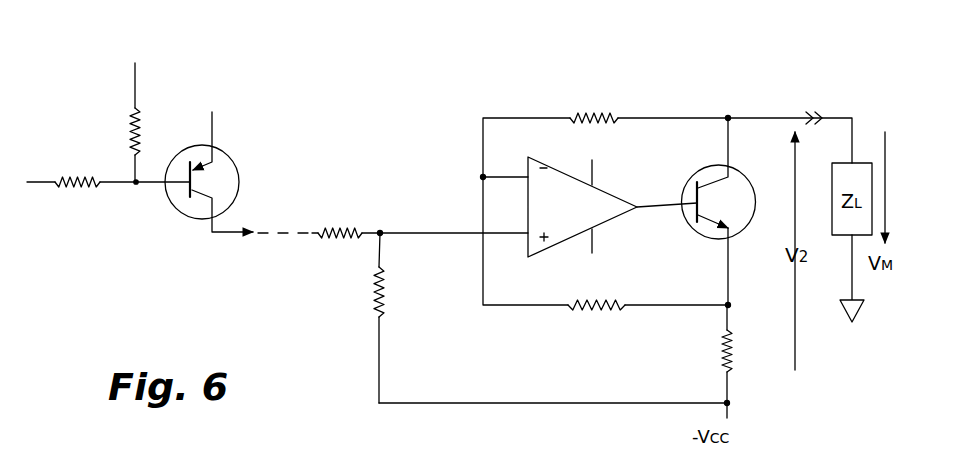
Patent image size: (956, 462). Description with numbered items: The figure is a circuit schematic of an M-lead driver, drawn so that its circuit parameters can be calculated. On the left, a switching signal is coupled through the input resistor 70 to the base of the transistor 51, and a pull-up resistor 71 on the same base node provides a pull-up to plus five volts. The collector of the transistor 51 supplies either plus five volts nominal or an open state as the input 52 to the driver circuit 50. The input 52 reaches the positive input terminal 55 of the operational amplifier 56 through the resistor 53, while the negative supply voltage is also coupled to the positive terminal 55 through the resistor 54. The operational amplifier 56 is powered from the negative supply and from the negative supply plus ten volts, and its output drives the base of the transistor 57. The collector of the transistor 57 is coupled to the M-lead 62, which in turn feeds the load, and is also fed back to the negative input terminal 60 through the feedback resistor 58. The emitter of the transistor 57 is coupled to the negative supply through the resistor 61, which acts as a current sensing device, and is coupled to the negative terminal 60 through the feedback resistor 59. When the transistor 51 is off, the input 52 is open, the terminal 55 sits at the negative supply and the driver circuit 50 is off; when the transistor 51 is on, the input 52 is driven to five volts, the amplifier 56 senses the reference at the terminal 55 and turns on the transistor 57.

The input resistor 70 is at (72, 190).
The pull-up resistor 71 is at (135, 133).
The transistor 51 is at (237, 162).
The input 52 is at (300, 233).
The resistor 53 is at (345, 240).
The resistor 54 is at (372, 297).
The positive input terminal 55 is at (382, 232).
The driver circuit 50 is at (498, 115).
The negative input terminal 60 is at (487, 175).
The operational amplifier 56 is at (612, 217).
The feedback resistor 58 is at (617, 108).
The feedback resistor 59 is at (620, 302).
The transistor 57 is at (734, 168).
The resistor 61 is at (733, 358).
The M-lead 62 is at (747, 119).